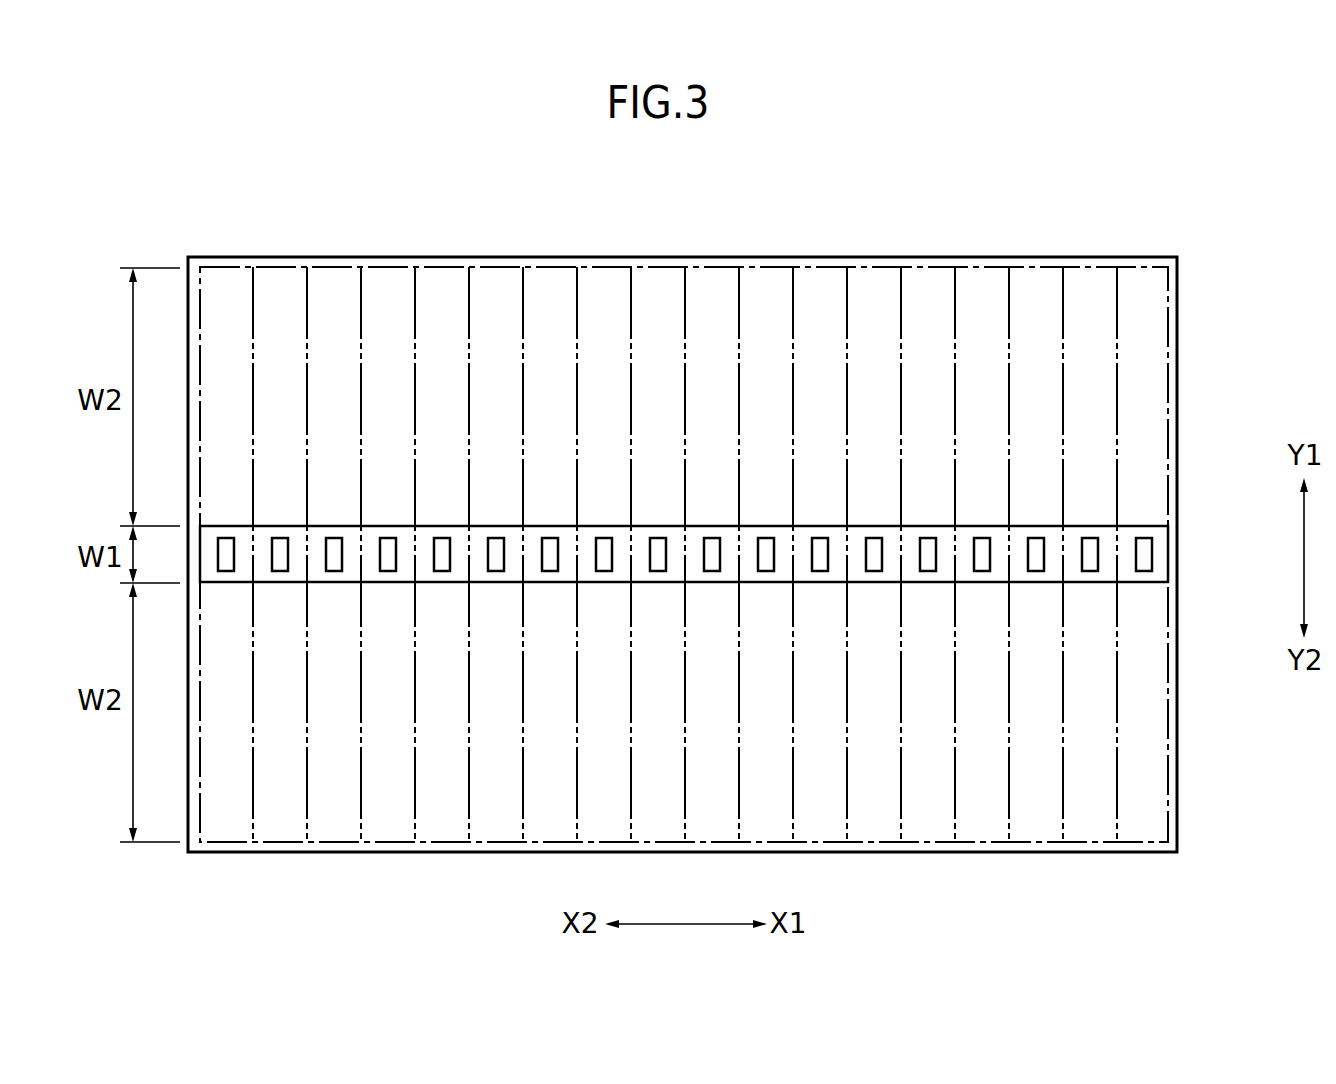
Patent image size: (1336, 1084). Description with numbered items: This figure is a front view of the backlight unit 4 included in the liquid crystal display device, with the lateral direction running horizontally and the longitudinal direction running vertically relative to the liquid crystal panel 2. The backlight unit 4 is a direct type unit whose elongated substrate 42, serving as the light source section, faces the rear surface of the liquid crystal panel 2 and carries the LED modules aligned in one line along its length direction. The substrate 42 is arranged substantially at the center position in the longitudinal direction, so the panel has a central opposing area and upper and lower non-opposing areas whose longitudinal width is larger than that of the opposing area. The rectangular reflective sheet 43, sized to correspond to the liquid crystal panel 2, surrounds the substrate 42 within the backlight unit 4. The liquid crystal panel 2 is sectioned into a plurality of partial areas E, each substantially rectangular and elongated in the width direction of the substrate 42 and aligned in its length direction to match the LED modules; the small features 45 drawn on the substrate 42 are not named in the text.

The liquid crystal panel 2 is at (1088, 262).
The backlight unit 4 is at (1143, 257).
The reflective sheet 43 is at (1152, 293).
The substrate 42 is at (1138, 526).
The terminal portions 45 is at (1091, 571).
The partial area E is at (980, 267).